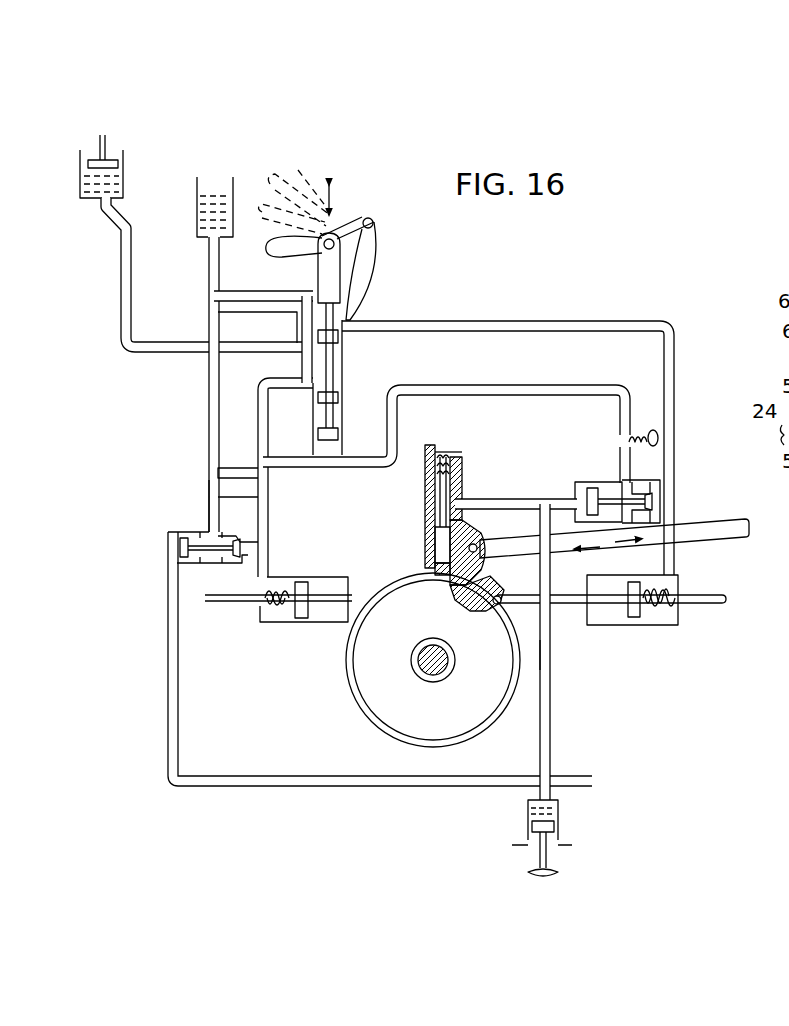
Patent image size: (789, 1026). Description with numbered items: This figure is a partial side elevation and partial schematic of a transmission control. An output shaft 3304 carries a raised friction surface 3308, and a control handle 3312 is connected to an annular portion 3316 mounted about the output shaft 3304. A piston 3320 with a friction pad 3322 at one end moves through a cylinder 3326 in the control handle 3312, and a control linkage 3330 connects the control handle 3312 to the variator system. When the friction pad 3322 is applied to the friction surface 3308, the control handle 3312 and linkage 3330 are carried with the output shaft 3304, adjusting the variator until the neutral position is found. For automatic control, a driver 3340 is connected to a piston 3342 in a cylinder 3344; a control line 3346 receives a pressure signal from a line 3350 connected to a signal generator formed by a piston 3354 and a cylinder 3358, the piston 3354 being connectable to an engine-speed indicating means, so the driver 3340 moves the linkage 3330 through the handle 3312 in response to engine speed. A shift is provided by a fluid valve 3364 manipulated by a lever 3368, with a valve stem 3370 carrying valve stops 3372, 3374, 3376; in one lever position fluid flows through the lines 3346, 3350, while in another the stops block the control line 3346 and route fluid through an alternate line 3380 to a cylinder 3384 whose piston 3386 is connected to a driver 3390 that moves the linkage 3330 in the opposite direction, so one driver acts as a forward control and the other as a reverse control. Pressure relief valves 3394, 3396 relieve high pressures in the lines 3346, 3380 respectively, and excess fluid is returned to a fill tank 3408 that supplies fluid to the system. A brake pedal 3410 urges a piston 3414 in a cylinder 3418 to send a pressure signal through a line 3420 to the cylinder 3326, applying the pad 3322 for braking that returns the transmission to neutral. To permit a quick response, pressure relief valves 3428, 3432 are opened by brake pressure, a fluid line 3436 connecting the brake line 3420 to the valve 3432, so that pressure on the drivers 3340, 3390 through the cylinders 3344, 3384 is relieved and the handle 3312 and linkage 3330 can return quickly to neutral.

The output shaft 3304 is at (209, 372).
The raised friction surface 3308 is at (382, 728).
The control handle 3312 is at (455, 470).
The annular portion 3316 is at (380, 652).
The piston 3320 is at (437, 530).
The friction pad 3322 is at (440, 568).
The cylinder 3326 is at (437, 500).
The control linkage 3330 is at (712, 528).
The driver 3340 is at (168, 672).
The piston 3342 is at (300, 606).
The cylinder 3344 is at (300, 564).
The control line 3346 is at (258, 405).
The line 3350 is at (124, 232).
The piston 3354 is at (106, 152).
The cylinder 3358 is at (86, 178).
The fluid valve 3364 is at (343, 415).
The lever 3368 is at (356, 216).
The valve stem 3370 is at (333, 316).
The valve stop 3372 is at (339, 338).
The valve stop 3374 is at (339, 398).
The valve stop 3376 is at (339, 437).
The alternate line 3380 is at (578, 322).
The cylinder 3384 is at (680, 614).
The piston 3386 is at (654, 622).
The driver 3390 is at (718, 586).
The pressure relief valve 3394 is at (209, 487).
The pressure relief valve 3396 is at (660, 442).
The fill tank 3408 is at (197, 205).
The brake pedal 3410 is at (556, 871).
The piston 3414 is at (556, 827).
The cylinder 3418 is at (560, 808).
The line 3420 is at (551, 656).
The pressure relief valve 3428 is at (168, 548).
The pressure relief valve 3432 is at (592, 484).
The fluid line 3436 is at (548, 500).